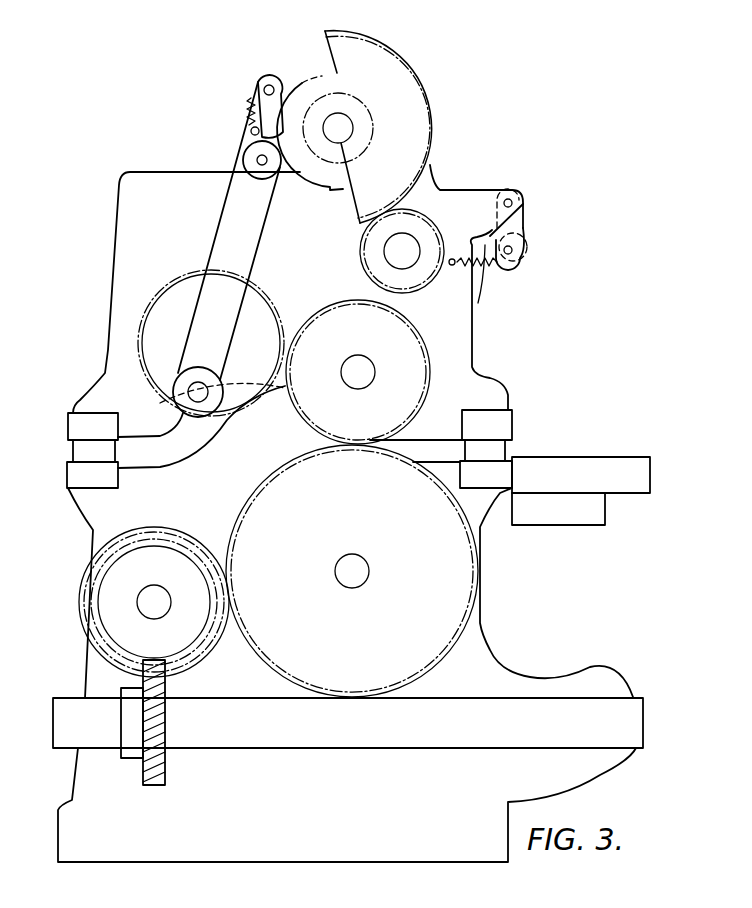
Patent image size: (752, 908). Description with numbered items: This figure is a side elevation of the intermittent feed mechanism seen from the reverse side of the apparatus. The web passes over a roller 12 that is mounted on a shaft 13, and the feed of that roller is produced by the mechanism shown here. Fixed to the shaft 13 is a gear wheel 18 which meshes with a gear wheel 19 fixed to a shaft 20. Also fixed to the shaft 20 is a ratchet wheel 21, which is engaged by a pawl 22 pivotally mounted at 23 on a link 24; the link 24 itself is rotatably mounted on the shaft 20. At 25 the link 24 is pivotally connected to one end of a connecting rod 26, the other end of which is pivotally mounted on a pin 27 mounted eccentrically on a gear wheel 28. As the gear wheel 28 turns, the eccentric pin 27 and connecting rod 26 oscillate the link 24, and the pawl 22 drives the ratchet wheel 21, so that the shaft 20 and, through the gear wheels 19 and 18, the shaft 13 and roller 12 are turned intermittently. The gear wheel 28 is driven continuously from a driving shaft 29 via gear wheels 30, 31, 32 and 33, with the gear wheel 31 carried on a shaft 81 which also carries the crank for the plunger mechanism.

The roller 12 is at (440, 176).
The shaft 13 is at (404, 249).
The gear wheel 18 is at (427, 286).
The gear wheel 19 is at (436, 120).
The shaft 20 is at (345, 124).
The ratchet wheel 21 is at (304, 88).
The pawl 22 is at (247, 114).
The pivot 23 is at (264, 88).
The link 24 is at (244, 143).
The pivot 25 is at (257, 163).
The connecting rod 26 is at (226, 214).
The pin 27 is at (195, 386).
The gear wheel 28 is at (172, 284).
The driving shaft 29 is at (442, 744).
The gear wheel 30 is at (166, 775).
The gear wheel 31 is at (96, 587).
The gear wheel 32 is at (462, 572).
The gear wheel 33 is at (415, 380).
The shaft 81 is at (154, 585).